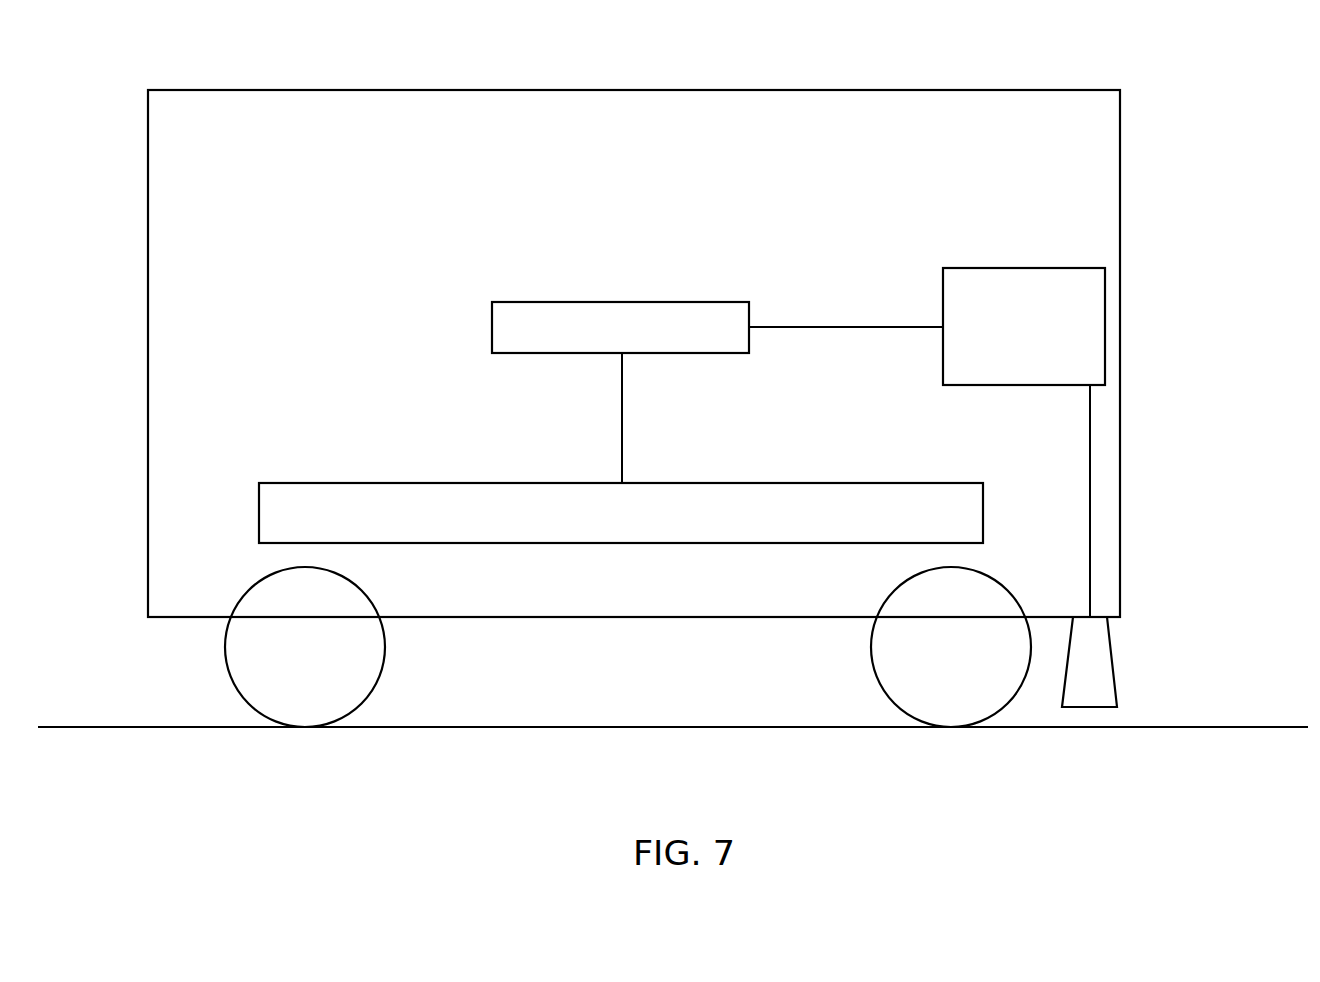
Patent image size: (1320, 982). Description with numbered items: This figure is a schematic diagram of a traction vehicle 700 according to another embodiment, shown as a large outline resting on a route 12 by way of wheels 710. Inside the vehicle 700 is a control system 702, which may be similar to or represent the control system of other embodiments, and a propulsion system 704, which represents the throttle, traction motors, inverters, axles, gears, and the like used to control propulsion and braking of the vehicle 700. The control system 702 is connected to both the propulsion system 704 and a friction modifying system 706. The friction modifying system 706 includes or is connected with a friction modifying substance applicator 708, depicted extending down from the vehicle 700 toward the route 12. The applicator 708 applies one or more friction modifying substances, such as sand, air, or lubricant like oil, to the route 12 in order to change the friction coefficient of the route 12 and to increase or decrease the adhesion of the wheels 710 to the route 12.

The traction vehicle 700 is at (1065, 90).
The control system 702 is at (652, 302).
The propulsion system 704 is at (873, 483).
The friction modifying system 706 is at (973, 268).
The friction modifying substance applicator 708 is at (1112, 655).
The wheels 710 is at (385, 657).
The route 12 is at (1226, 727).